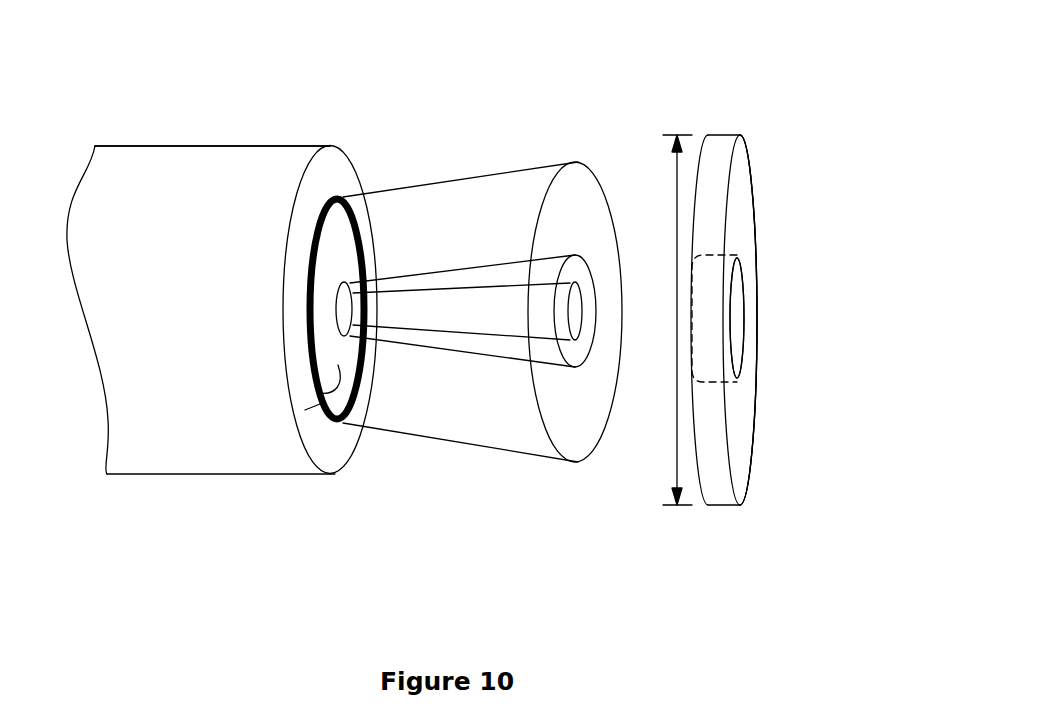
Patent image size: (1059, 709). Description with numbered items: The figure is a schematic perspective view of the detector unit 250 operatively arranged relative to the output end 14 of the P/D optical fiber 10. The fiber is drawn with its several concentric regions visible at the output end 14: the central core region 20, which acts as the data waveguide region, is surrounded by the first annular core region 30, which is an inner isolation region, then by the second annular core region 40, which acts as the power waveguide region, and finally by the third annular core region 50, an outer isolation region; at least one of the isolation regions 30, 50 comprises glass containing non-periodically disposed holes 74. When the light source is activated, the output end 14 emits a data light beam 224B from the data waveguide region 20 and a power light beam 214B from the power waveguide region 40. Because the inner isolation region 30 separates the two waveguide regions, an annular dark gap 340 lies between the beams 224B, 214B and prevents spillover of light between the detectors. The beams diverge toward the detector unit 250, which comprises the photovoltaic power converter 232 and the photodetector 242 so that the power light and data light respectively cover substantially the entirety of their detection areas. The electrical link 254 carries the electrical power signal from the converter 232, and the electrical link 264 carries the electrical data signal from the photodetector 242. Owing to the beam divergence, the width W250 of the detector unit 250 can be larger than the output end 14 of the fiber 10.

The P/D optical fiber 10 is at (146, 108).
The output end 14 is at (350, 169).
The central core region 20 is at (307, 311).
The first annular core region 30 is at (330, 282).
The second annular core region 40 is at (320, 393).
The third annular core region 50 is at (325, 402).
The non-periodically disposed holes 74 is at (326, 296).
The power light beam 214B is at (498, 422).
The data light beam 224B is at (487, 312).
The gap 340 is at (580, 352).
The detector unit 250 is at (750, 98).
The photovoltaic power converter 232 is at (745, 176).
The photodetector 242 is at (744, 298).
The electrical link 254 is at (745, 217).
The electrical link 264 is at (744, 312).
The width of detector unit W250 is at (677, 173).